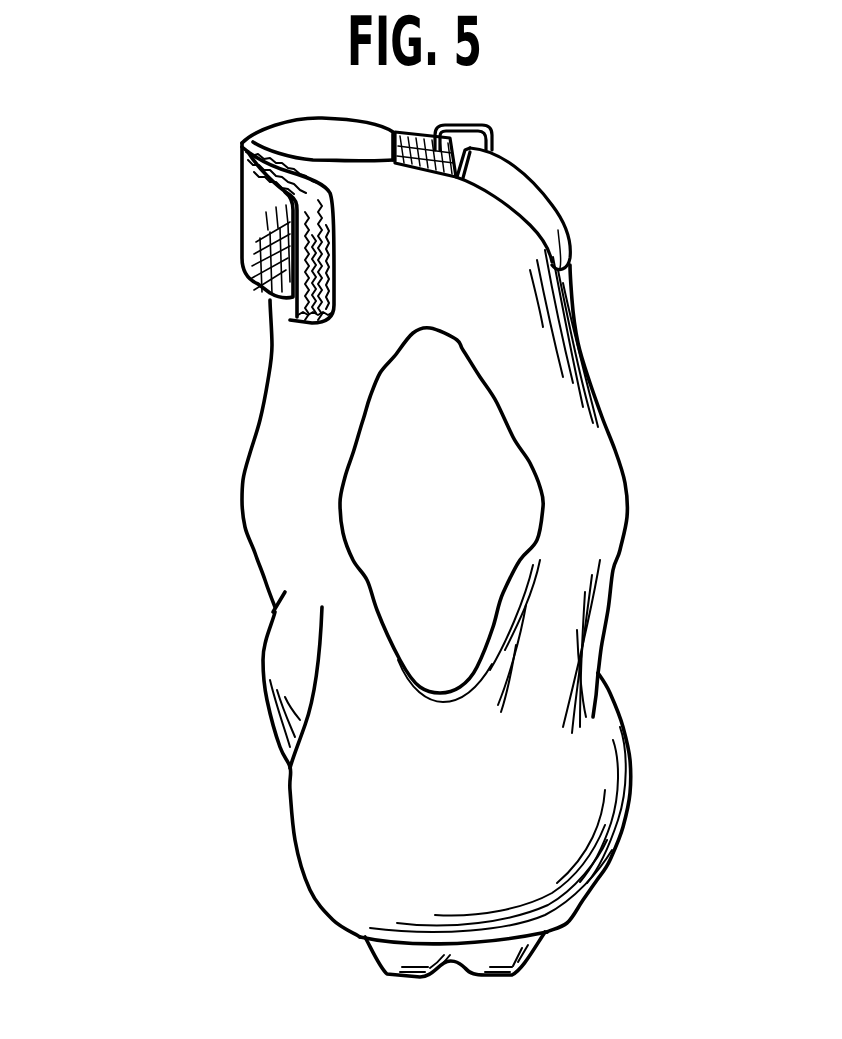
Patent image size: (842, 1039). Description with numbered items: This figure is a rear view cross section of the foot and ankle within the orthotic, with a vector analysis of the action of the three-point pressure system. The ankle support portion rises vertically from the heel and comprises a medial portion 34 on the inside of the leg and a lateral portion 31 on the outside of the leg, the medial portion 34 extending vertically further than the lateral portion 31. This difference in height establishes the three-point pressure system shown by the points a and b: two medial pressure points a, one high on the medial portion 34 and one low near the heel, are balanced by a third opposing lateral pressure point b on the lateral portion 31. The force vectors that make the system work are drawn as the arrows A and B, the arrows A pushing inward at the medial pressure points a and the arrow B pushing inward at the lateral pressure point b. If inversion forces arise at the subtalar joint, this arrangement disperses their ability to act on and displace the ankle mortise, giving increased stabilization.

The lateral portion 31 is at (577, 457).
The medial portion 34 is at (320, 446).
The medial pressure points a is at (290, 519).
The lateral pressure point b is at (591, 484).
The force vector A is at (142, 536).
The force vector B is at (749, 497).